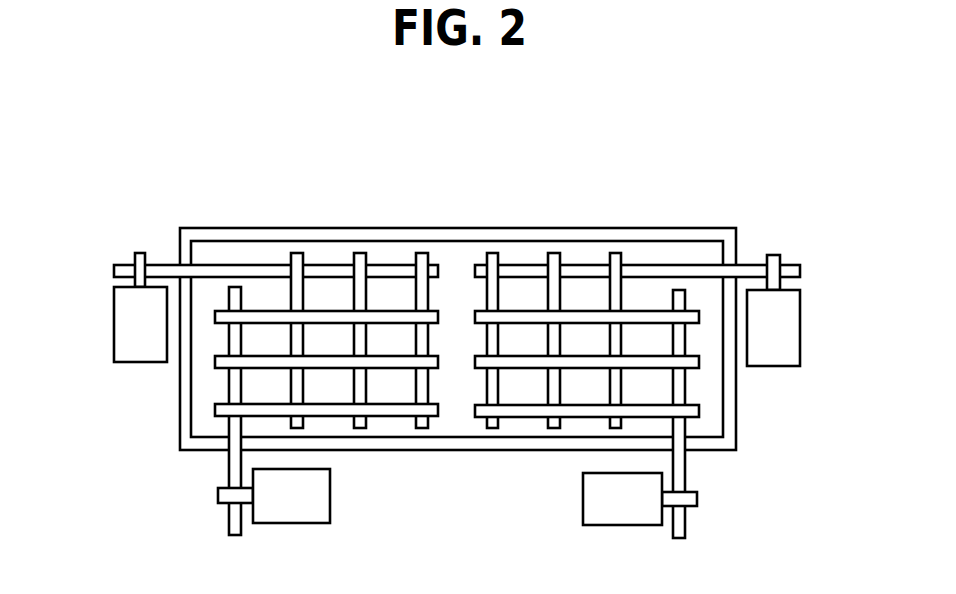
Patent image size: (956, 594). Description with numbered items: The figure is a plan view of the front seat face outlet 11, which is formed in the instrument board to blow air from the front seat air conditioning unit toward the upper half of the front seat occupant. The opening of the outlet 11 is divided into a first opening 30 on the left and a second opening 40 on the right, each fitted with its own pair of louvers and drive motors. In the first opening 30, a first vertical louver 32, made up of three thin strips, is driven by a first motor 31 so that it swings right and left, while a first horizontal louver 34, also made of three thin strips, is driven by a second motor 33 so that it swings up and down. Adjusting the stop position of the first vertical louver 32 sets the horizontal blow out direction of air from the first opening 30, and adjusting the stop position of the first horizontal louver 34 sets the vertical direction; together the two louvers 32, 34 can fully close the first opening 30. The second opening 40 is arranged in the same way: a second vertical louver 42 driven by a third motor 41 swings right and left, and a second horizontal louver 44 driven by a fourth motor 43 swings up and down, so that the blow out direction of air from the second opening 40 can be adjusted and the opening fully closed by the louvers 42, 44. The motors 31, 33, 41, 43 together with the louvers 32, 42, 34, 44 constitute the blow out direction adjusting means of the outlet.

The front seat face outlet 11 is at (420, 208).
The first opening 30 is at (222, 252).
The first motor 31 is at (133, 322).
The first vertical louver 32 is at (297, 260).
The second motor 33 is at (300, 512).
The first horizontal louver 34 is at (222, 406).
The second opening 40 is at (657, 253).
The third motor 41 is at (788, 338).
The second vertical louver 42 is at (492, 260).
The fourth motor 43 is at (633, 512).
The second horizontal louver 44 is at (693, 412).